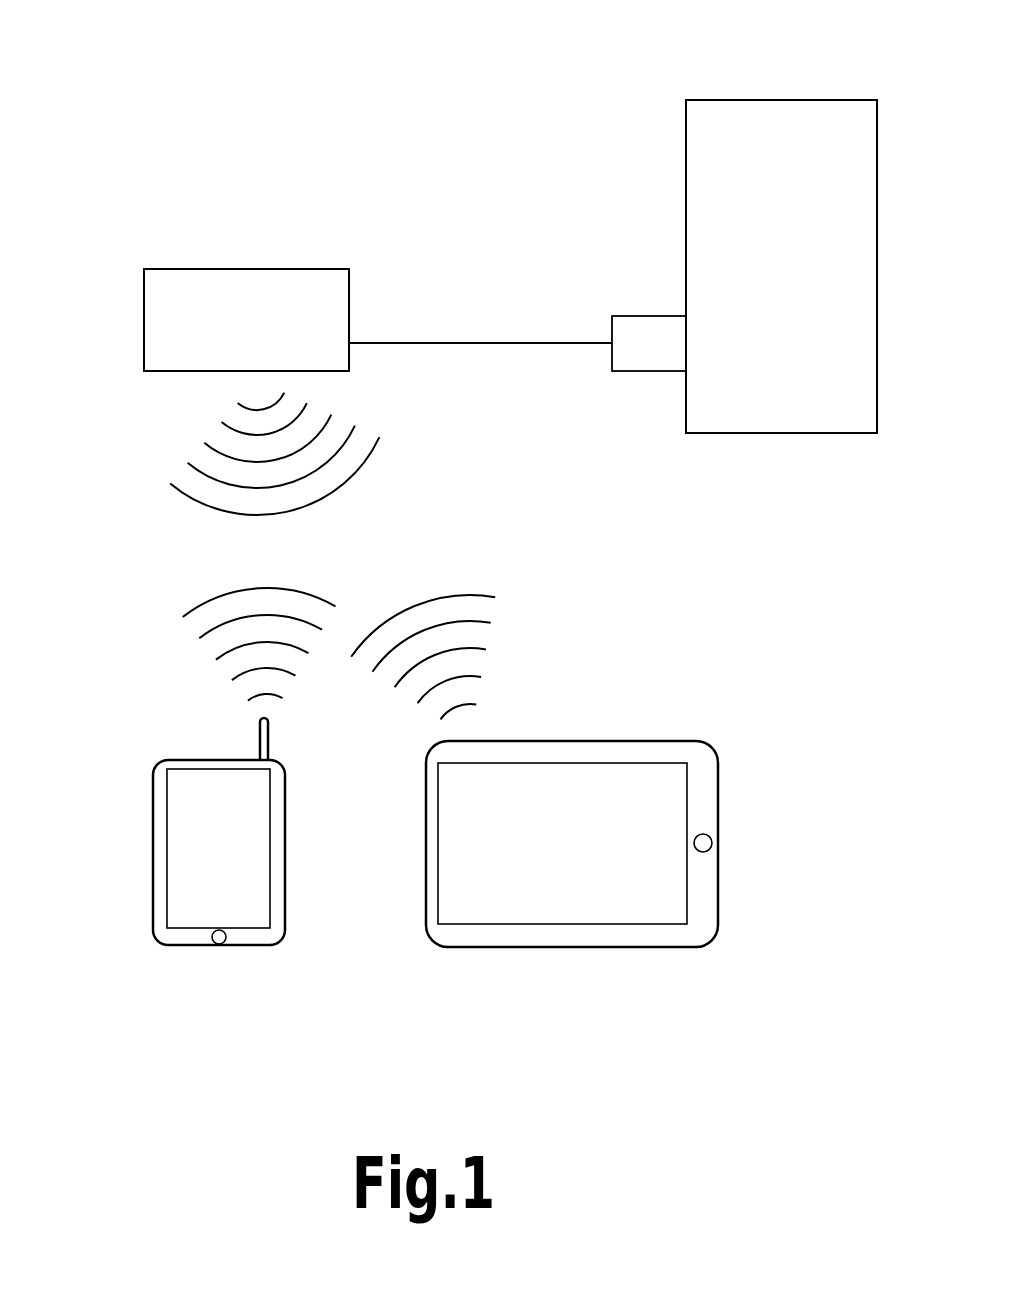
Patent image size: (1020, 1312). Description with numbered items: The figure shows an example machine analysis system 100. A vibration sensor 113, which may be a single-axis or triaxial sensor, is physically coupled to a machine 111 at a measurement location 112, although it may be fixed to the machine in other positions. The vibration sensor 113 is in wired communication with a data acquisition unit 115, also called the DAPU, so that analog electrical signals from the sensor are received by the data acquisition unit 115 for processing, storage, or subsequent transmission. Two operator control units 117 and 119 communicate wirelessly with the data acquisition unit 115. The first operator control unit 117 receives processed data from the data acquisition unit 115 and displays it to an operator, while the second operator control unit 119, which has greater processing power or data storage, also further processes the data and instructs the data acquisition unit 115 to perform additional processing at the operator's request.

The machine analysis system 100 is at (140, 170).
The machine 111 is at (788, 178).
The measurement location 112 is at (686, 343).
The vibration sensor 113 is at (637, 335).
The data acquisition unit 115 is at (267, 269).
The first operator control unit 117 is at (263, 937).
The second operator control unit 119 is at (632, 903).